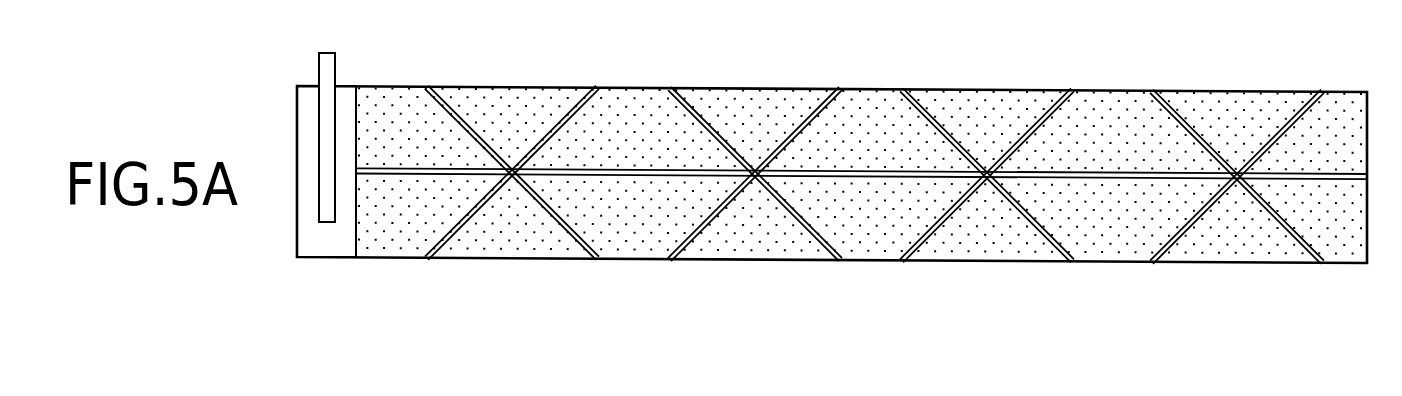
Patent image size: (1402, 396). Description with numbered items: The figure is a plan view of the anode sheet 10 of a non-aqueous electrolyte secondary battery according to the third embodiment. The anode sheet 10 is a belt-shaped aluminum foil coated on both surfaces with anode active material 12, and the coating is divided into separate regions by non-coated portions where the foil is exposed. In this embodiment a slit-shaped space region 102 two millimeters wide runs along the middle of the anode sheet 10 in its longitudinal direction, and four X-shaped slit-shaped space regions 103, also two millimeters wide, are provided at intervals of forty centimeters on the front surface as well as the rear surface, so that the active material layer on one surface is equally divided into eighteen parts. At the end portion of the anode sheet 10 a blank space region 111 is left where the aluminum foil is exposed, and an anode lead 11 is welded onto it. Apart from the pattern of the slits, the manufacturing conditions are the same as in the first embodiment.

The anode sheet 10 is at (638, 84).
The anode lead 11 is at (328, 70).
The blank space region 111 is at (342, 248).
The anode active material 12 is at (858, 102).
The slit-shaped space region 102 is at (1057, 172).
The X-shaped slit-shaped space regions 103 is at (1282, 130).